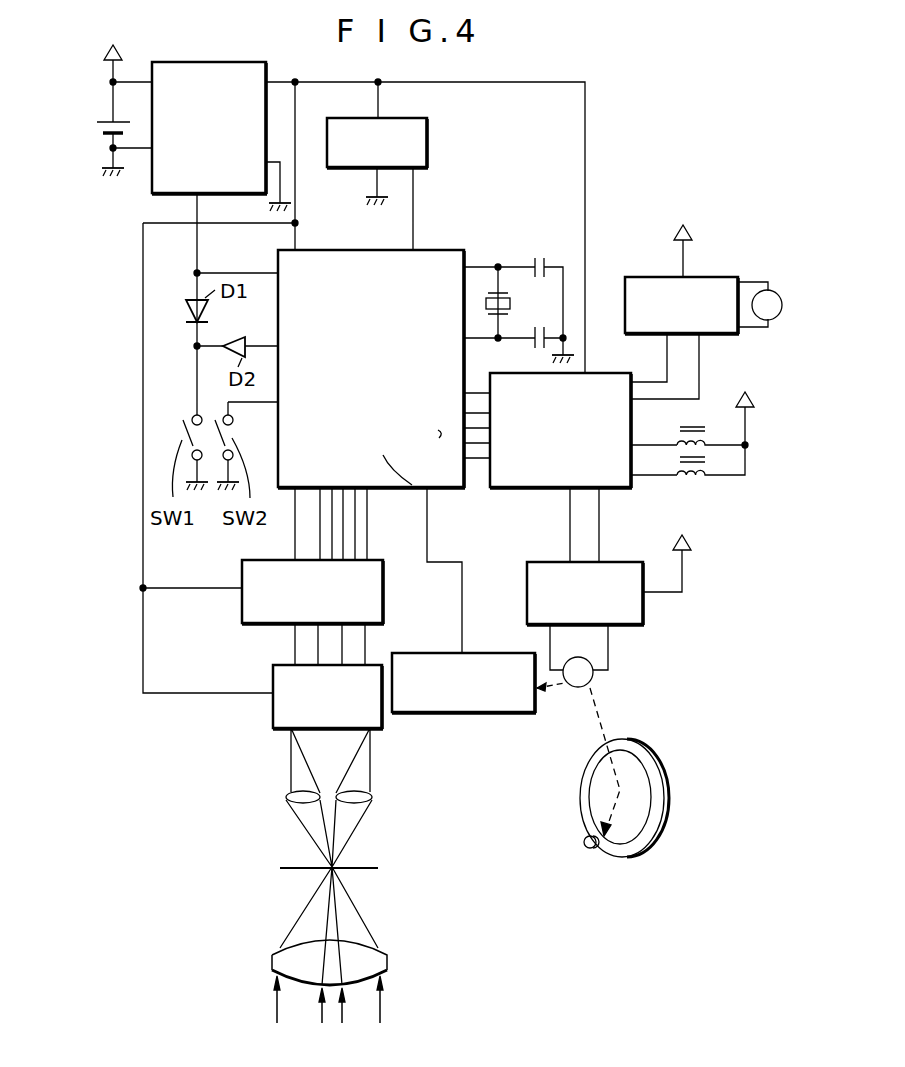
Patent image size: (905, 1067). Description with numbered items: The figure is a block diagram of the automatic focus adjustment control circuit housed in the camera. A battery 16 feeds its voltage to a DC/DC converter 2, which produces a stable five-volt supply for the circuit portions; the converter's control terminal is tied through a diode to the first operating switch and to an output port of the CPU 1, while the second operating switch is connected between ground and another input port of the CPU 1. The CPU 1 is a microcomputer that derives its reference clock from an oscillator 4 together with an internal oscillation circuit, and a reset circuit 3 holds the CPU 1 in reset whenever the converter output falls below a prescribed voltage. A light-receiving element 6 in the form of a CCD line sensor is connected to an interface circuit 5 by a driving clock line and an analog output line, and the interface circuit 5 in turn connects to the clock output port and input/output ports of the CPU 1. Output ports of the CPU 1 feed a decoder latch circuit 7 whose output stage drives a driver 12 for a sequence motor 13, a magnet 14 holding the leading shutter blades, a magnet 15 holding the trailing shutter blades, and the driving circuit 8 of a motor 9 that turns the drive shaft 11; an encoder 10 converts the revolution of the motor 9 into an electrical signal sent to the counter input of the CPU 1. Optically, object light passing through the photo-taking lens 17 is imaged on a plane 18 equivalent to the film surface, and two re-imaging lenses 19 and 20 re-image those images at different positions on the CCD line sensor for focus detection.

The CPU 1 is at (433, 250).
The DC/DC converter 2 is at (237, 62).
The reset circuit 3 is at (422, 118).
The oscillator 4 is at (505, 294).
The interface circuit 5 is at (383, 602).
The light-receiving element 6 is at (272, 720).
The decoder latch circuit 7 is at (523, 487).
The driving circuit 8 is at (630, 626).
The motor 9 is at (590, 677).
The encoder 10 is at (455, 708).
The drive shaft 11 is at (588, 848).
The driver 12 is at (708, 276).
The sequence motor 13 is at (775, 290).
The magnet 14 is at (706, 442).
The magnet 15 is at (691, 483).
The battery 16 is at (97, 127).
The photo-taking lens 17 is at (387, 952).
The plane equivalent to the film surface 18 is at (378, 868).
The re-imaging lens 19 is at (286, 797).
The re-imaging lens 20 is at (372, 797).